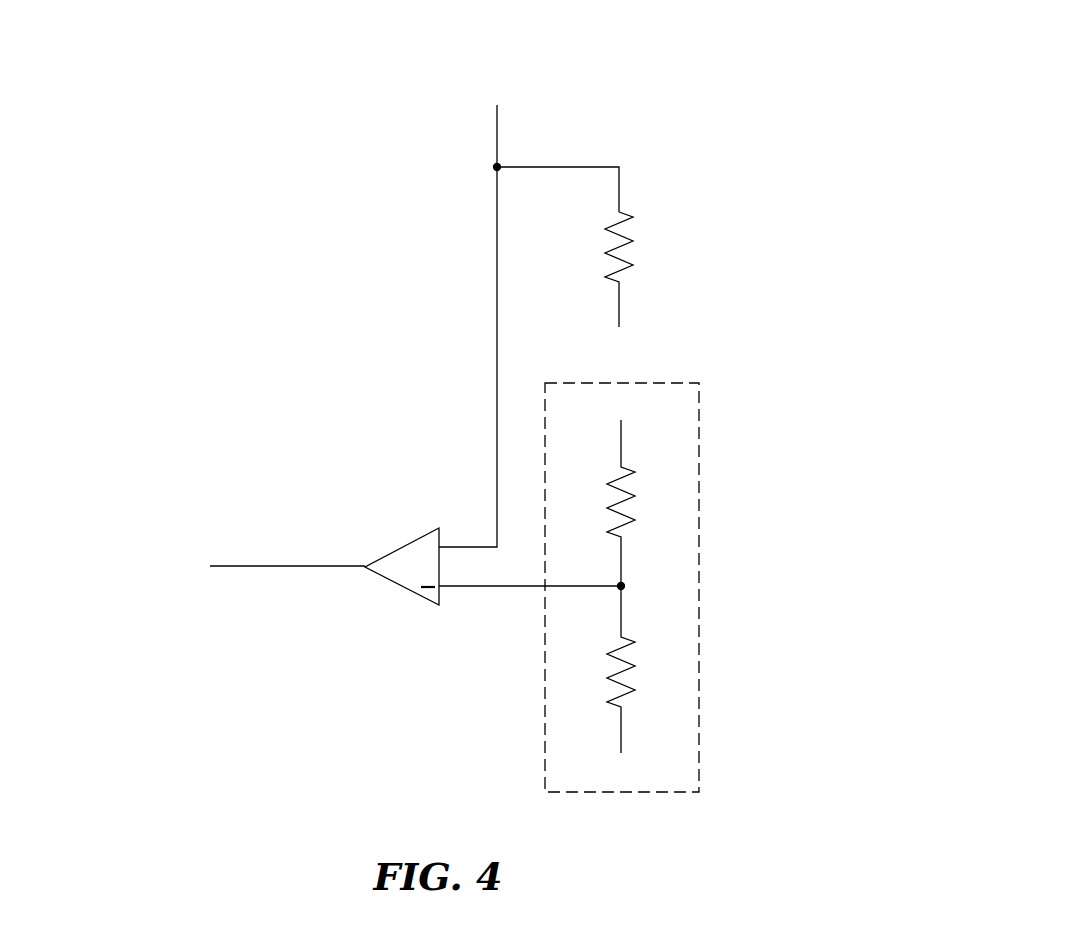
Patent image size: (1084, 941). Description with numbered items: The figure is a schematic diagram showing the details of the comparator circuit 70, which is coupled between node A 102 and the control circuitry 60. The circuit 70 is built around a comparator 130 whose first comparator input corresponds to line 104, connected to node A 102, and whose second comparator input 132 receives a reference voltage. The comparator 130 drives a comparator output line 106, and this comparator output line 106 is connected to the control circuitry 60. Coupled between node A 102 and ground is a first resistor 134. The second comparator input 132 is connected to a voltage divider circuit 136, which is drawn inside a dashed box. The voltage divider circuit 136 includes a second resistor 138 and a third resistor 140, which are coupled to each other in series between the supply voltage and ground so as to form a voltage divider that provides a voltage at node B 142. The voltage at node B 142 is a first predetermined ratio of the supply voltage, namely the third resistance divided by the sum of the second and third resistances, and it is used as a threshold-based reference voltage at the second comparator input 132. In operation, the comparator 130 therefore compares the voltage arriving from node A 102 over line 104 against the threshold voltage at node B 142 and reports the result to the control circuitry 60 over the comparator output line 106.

The comparator circuit 70 is at (650, 48).
The node A 102 is at (496, 95).
The line 104 is at (497, 135).
The comparator output line 106 is at (293, 567).
The comparator 130 is at (394, 579).
The second comparator input 132 is at (490, 588).
The first resistor 134 is at (616, 222).
The voltage divider circuit 136 is at (699, 443).
The second resistor 138 is at (618, 477).
The third resistor 140 is at (620, 647).
The node B 142 is at (620, 583).
The control circuitry 60 is at (153, 566).